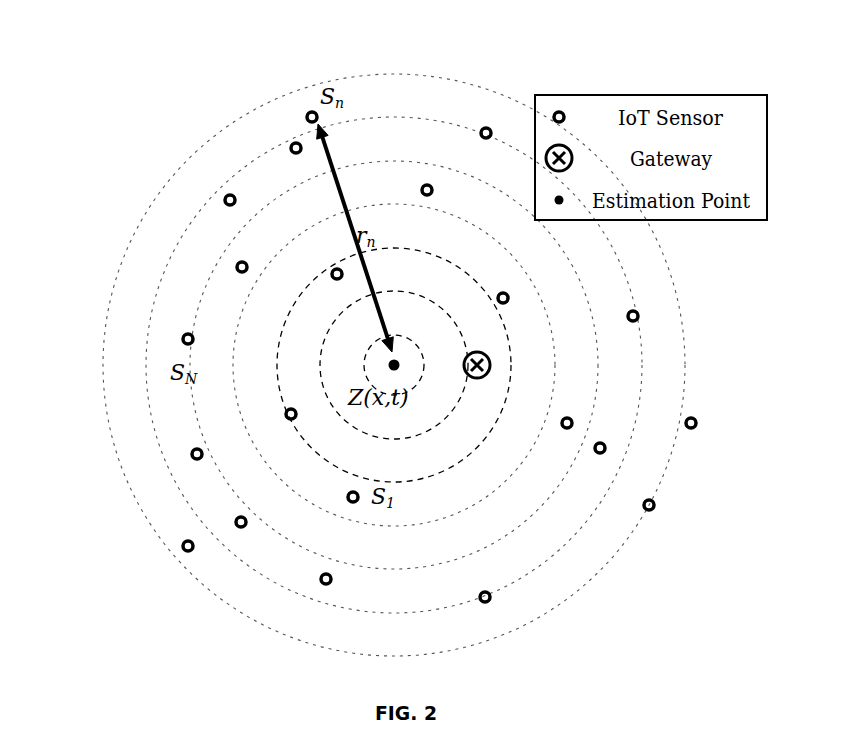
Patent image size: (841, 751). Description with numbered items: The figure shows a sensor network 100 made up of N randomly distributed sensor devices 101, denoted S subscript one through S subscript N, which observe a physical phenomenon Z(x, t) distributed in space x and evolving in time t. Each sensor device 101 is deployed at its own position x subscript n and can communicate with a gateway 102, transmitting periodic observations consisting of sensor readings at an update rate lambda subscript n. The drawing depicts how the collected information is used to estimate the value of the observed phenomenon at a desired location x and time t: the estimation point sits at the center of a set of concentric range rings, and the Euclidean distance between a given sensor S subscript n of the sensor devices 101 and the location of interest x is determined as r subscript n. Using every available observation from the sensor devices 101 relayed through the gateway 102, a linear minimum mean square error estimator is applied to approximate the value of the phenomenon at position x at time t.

The sensor network 100 is at (583, 60).
The sensor device 101 is at (309, 111).
The gateway 102 is at (491, 364).